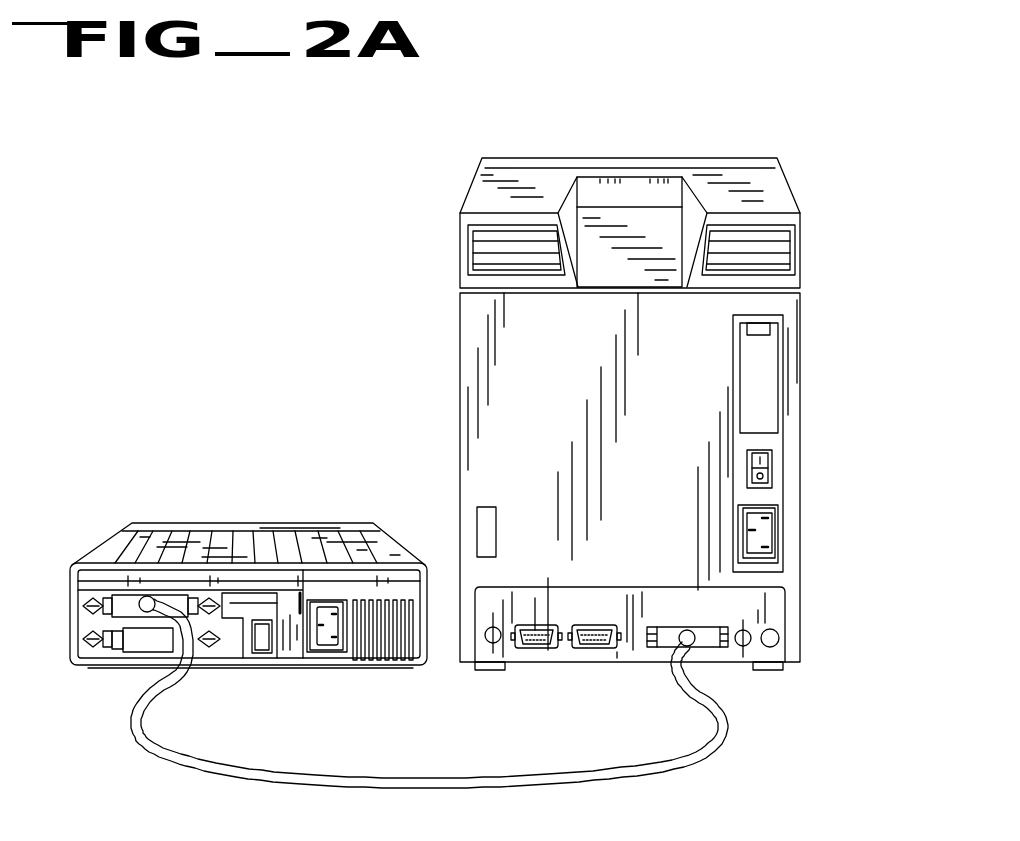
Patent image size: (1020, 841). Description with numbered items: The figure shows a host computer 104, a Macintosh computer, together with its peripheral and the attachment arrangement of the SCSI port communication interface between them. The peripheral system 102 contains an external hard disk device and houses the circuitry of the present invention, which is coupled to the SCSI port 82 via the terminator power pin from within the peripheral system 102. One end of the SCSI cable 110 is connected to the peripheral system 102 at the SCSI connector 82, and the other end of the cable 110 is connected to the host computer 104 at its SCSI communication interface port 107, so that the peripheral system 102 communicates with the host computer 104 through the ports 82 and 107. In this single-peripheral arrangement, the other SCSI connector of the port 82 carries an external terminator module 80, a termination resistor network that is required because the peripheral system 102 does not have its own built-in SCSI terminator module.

The host computer 104 is at (796, 191).
The SCSI communication interface port 107 is at (706, 645).
The SCSI cable 110 is at (505, 777).
The peripheral system 102 is at (253, 523).
The SCSI port 82 is at (114, 607).
The external terminator module 80 is at (146, 642).